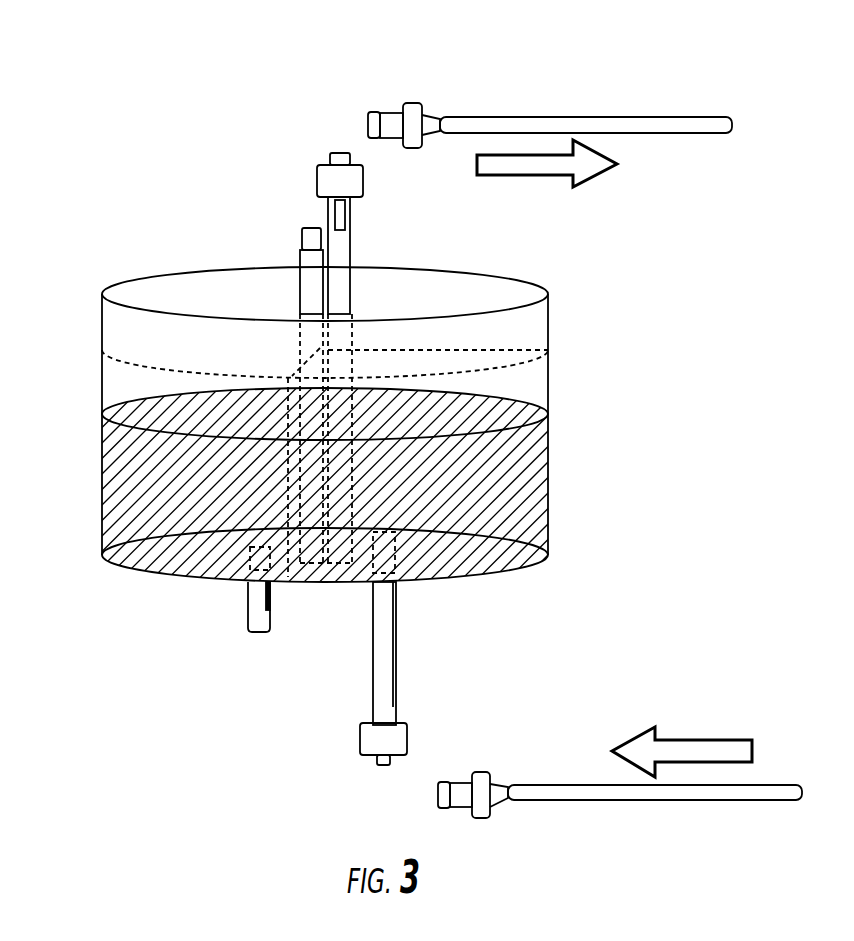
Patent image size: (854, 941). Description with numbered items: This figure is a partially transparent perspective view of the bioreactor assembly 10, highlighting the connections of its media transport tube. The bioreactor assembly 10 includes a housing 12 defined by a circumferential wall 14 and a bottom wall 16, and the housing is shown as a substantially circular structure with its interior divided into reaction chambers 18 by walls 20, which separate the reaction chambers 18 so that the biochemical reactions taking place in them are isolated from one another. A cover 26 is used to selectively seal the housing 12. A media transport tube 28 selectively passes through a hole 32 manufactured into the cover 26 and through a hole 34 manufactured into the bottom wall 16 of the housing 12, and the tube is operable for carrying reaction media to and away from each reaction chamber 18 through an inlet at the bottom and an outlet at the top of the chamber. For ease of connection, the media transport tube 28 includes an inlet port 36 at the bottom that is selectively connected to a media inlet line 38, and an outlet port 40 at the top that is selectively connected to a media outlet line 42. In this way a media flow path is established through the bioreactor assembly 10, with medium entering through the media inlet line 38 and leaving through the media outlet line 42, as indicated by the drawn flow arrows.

The bioreactor assembly 10 is at (467, 80).
The housing 12 is at (379, 440).
The circumferential wall 14 is at (533, 473).
The bottom wall 16 is at (523, 577).
The reaction chamber 18 is at (387, 488).
The wall 20 is at (280, 403).
The cover 26 is at (525, 287).
The media transport tube 28 is at (290, 342).
The hole 32 is at (290, 297).
The hole 34 is at (328, 598).
The inlet port 36 is at (370, 740).
The media inlet line 38 is at (783, 792).
The outlet port 40 is at (317, 185).
The media outlet line 42 is at (713, 122).